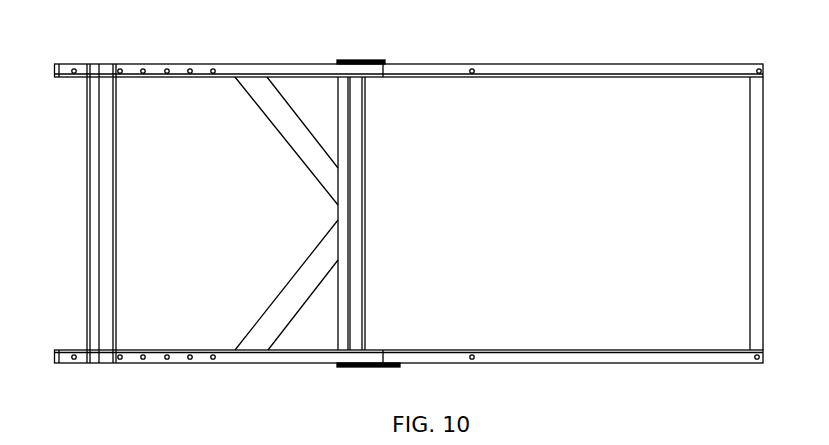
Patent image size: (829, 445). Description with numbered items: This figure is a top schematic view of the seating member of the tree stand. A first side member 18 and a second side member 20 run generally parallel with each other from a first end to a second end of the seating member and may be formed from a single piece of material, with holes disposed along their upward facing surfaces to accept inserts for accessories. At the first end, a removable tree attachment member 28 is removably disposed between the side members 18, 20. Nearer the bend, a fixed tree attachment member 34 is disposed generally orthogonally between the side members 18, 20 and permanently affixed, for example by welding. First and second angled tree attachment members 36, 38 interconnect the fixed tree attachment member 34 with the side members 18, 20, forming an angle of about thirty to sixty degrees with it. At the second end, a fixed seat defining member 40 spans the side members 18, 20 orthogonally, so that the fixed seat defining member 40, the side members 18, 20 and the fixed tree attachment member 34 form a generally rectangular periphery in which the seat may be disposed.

The first side member 18 is at (498, 75).
The second side member 20 is at (573, 352).
The removable tree attachment member 28 is at (108, 278).
The fixed tree attachment member 34 is at (353, 225).
The first angled tree attachment member 36 is at (302, 280).
The second angled tree attachment member 38 is at (265, 102).
The fixed seat defining member 40 is at (753, 210).